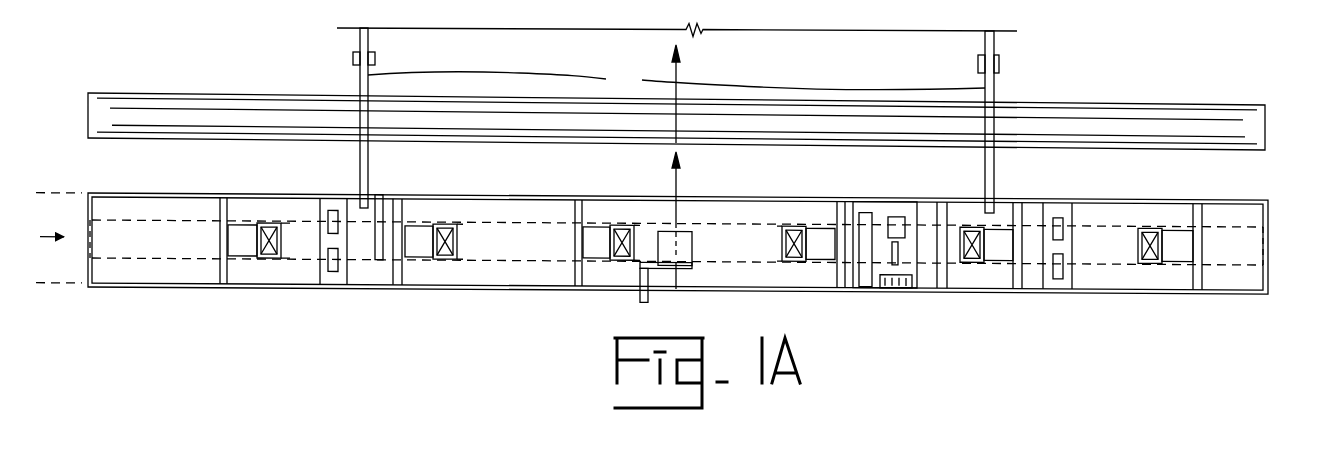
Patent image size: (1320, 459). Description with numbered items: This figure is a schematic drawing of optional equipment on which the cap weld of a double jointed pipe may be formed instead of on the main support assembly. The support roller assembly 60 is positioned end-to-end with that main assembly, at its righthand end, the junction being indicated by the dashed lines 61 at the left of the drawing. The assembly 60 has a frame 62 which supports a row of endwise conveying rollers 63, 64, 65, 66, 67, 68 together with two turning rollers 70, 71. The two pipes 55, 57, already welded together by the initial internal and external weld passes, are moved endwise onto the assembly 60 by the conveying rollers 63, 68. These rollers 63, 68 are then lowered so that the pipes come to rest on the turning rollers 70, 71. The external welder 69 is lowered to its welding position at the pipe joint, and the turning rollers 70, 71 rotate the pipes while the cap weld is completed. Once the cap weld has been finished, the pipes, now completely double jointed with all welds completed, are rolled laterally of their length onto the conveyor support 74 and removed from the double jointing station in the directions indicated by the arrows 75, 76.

The pipe 55 is at (510, 221).
The pipe 57 is at (1085, 227).
The support roller assembly 60 is at (513, 318).
The dashed lines 61 is at (44, 287).
The frame 62 is at (553, 289).
The conveying roller 63 is at (270, 258).
The conveying roller 64 is at (445, 258).
The conveying roller 65 is at (622, 218).
The conveying roller 66 is at (797, 218).
The conveying roller 67 is at (972, 259).
The conveying roller 68 is at (1150, 259).
The external welder 69 is at (693, 248).
The turning roller 70 is at (332, 271).
The turning roller 71 is at (1058, 276).
The conveyor support 74 is at (676, 82).
The arrow 75 is at (682, 173).
The arrow 76 is at (682, 68).